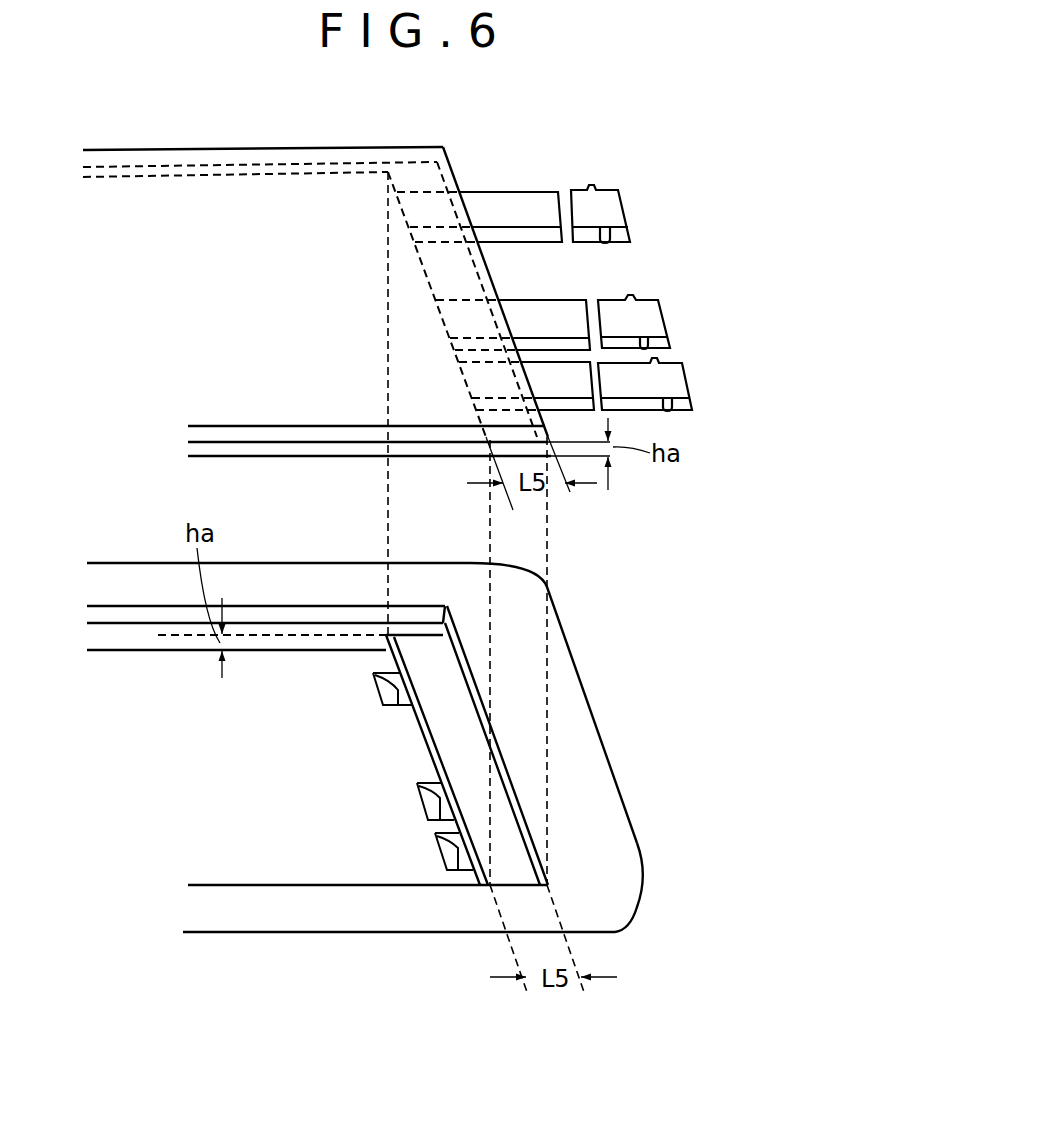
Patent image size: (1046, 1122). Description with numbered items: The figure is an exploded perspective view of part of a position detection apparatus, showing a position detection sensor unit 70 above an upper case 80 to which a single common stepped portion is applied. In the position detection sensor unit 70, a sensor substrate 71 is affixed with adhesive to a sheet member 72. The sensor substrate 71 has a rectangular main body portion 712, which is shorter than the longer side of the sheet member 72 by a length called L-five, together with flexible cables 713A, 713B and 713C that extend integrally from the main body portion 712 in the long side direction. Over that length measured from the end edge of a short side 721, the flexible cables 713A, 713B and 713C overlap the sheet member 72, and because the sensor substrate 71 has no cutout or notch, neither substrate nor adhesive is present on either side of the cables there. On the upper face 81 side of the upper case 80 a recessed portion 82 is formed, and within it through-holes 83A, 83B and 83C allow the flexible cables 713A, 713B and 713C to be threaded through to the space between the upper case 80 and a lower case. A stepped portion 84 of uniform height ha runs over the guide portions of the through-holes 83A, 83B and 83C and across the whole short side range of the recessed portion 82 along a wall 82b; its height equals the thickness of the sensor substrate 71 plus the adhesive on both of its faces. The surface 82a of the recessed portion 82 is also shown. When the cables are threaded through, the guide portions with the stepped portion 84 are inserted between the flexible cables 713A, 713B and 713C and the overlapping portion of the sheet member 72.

The position detection sensor unit 70 is at (158, 147).
The sheet member 72 is at (396, 153).
The short side 721 is at (453, 170).
The flexible cable 713A is at (612, 212).
The flexible cable 713B is at (648, 322).
The flexible cable 713C is at (665, 385).
The sensor substrate 71 is at (277, 447).
The main body portion 712 is at (207, 450).
The upper case 80 is at (565, 705).
The upper face 81 is at (533, 787).
The recessed portion 82 is at (235, 812).
The upper surface of bottom portion 82a is at (266, 873).
The wall 82b is at (543, 867).
The through-hole 83A is at (375, 670).
The through-hole 83B is at (426, 810).
The through-hole 83C is at (447, 862).
The stepped portion 84 is at (423, 643).